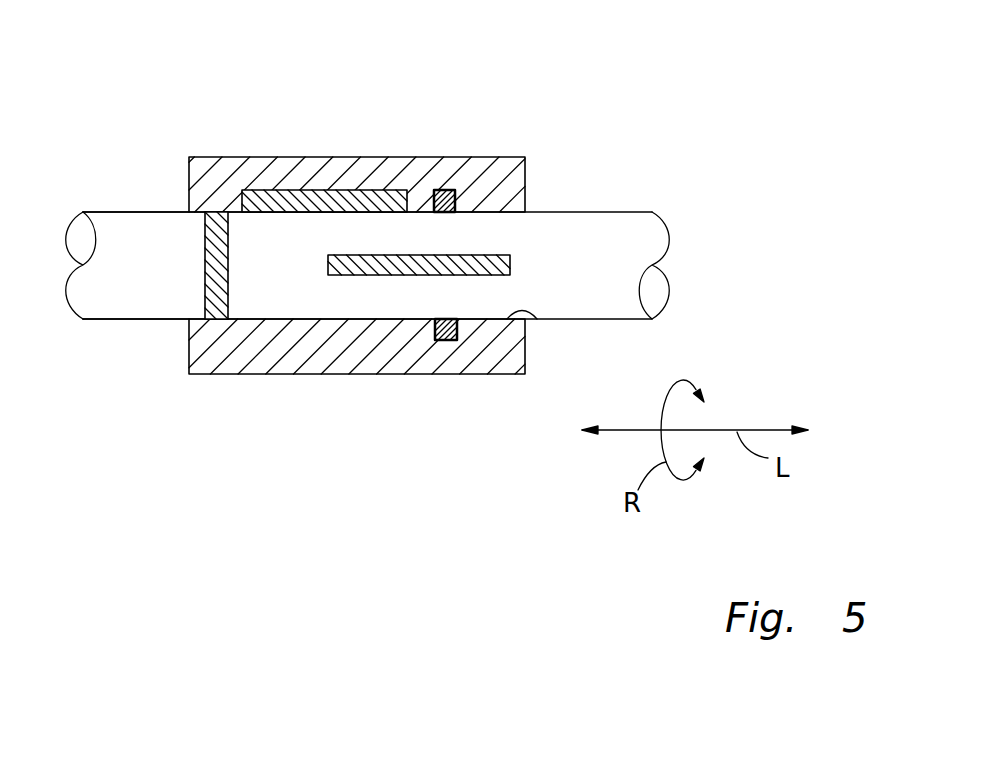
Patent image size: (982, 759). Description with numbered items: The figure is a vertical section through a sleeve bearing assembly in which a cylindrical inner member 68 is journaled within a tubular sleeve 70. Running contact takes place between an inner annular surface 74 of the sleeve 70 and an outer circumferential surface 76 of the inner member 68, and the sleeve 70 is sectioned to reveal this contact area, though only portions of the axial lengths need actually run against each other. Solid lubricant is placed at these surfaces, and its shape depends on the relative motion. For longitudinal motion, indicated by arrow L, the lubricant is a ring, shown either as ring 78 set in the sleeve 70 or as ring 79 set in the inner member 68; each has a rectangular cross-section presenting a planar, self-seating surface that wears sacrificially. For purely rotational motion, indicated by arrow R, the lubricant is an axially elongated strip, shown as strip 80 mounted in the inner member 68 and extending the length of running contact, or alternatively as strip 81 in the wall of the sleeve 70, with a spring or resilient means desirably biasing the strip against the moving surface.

The cylindrical inner member 68 is at (602, 213).
The tubular sleeve 70 is at (336, 152).
The inner annular surface 74 is at (533, 320).
The outer circumferential surface 76 is at (118, 322).
The ring 78 is at (447, 190).
The ring 79 is at (223, 320).
The strip 80 is at (510, 272).
The strip 81 is at (408, 189).